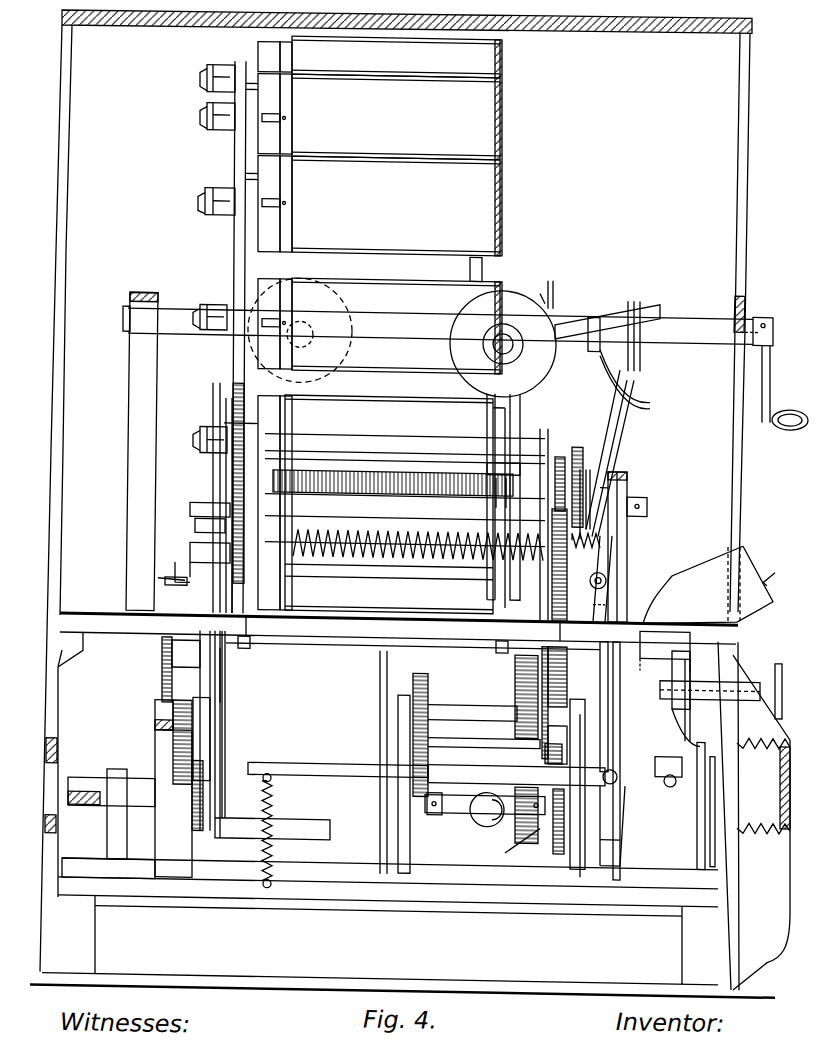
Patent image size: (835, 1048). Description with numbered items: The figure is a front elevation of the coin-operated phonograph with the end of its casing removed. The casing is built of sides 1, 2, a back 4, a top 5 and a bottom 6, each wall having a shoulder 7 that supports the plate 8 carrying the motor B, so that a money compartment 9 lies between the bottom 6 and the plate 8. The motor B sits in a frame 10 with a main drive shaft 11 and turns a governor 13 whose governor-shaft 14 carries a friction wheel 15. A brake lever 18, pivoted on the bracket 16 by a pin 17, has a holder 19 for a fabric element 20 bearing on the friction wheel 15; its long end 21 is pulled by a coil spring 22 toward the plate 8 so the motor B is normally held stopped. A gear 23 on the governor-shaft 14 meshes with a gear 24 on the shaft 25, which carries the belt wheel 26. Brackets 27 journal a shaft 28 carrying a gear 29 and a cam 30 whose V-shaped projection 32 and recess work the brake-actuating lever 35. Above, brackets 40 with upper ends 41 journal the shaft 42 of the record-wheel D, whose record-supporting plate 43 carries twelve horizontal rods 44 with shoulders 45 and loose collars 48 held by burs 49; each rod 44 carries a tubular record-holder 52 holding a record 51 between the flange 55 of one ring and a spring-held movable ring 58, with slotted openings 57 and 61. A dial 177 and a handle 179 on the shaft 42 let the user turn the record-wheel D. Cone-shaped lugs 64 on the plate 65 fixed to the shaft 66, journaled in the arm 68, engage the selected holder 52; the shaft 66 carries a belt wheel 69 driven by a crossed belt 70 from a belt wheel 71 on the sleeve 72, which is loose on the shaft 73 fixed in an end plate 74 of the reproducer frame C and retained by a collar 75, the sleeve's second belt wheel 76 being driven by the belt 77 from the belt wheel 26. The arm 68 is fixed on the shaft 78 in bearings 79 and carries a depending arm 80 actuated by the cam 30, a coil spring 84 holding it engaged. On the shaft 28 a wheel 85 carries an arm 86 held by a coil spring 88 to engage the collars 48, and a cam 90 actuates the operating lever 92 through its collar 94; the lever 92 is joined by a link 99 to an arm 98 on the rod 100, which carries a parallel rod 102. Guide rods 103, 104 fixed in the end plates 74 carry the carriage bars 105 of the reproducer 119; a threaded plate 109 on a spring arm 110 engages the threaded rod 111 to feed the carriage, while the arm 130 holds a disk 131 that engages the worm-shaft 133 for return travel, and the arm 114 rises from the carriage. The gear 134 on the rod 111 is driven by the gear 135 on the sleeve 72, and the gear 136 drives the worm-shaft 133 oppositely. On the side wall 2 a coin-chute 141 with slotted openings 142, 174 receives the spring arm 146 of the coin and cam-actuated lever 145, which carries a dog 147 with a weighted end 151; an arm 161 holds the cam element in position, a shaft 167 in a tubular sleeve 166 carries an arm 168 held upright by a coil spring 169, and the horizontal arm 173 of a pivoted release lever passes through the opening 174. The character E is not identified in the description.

The side 1 is at (80, 716).
The side wall 2 is at (728, 840).
The back 4 is at (80, 669).
The top 5 is at (462, 624).
The bottom 6 is at (341, 975).
The shoulder 7 is at (78, 900).
The plate 8 is at (416, 900).
The compartment 9 is at (545, 940).
The frame 10 is at (398, 741).
The main drive shaft 11 is at (585, 700).
The governor 13 is at (487, 820).
The governor-shaft 14 is at (428, 806).
The friction wheel 15 is at (520, 843).
The standard or bracket 16 is at (620, 836).
The pin 17 is at (621, 778).
The brake lever 18 is at (516, 745).
The holder 19 is at (524, 749).
The fabric element 20 is at (548, 752).
The free or long end 21 is at (292, 760).
The coil spring 22 is at (274, 846).
The gear 23 is at (512, 848).
The gear 24 is at (556, 850).
The shaft 25 is at (622, 818).
The belt wheel 26 is at (600, 740).
The brackets or standards 27 is at (252, 645).
The shaft 28 is at (172, 651).
The gear 29 is at (560, 668).
The cam 30 is at (610, 680).
The V-shaped projection 32 is at (565, 655).
The brake-actuating lever 35 is at (665, 792).
The supports or brackets 40 is at (130, 422).
The upper ends 41 is at (128, 330).
The shaft 42 is at (165, 306).
The record-supporting plate 43 is at (235, 263).
The shafts or rods 44 is at (200, 312).
The shoulder 45 is at (248, 290).
The collar 48 is at (222, 64).
The bur 49 is at (207, 96).
The record 51 is at (374, 324).
The tubular element 52 is at (262, 50).
The flange 55 is at (505, 50).
The right angular slotted openings 57 is at (672, 746).
The movable ring 58 is at (292, 60).
The slotted openings 61 is at (282, 116).
The cone-shaped lug 64 is at (542, 285).
The plate 65 is at (555, 278).
The shaft 66 is at (572, 315).
The arm 68 is at (620, 420).
The belt wheel 69 is at (640, 300).
The crossed belt 70 is at (630, 400).
The belt wheel 71 is at (627, 488).
The sleeve 72 is at (600, 460).
The shaft 73 is at (647, 496).
The upper end plates 74 is at (403, 627).
The collar 75 is at (658, 510).
The second belt wheel 76 is at (628, 472).
The belt 77 is at (628, 541).
The shaft 78 is at (607, 572).
The bearings or brackets 79 is at (606, 596).
The depending arm 80 is at (612, 652).
The coil spring 84 is at (586, 553).
The wheel 85 is at (210, 694).
The arm 86 is at (222, 648).
The coil spring 88 is at (212, 700).
The cam 90 is at (162, 672).
The operating lever 92 is at (176, 570).
The collar 94 is at (158, 576).
The arm 98 is at (196, 522).
The link 99 is at (190, 548).
The rod or shaft 100 is at (197, 507).
The rod 102 is at (213, 477).
The guide rod 103 is at (225, 381).
The guide rod 104 is at (335, 465).
The bars 105 is at (490, 418).
The threaded plate 109 is at (495, 482).
The spring arm 110 is at (515, 475).
The finely threaded rod 111 is at (395, 505).
The arm 114 is at (530, 420).
The reproducer 119 is at (503, 344).
The arm 130 is at (498, 605).
The disk 131 is at (470, 538).
The worm-shaft 133 is at (435, 562).
The gear 134 is at (580, 435).
The gear 135 is at (588, 460).
The gear 136 is at (559, 445).
The coin-chute 141 is at (716, 767).
The slotted opening 142 is at (681, 647).
The coin and cam-actuated lever 145 is at (662, 709).
The spring arm 146 is at (675, 700).
The dog 147 is at (697, 816).
The weighted end 151 is at (698, 858).
The arm 161 is at (700, 731).
The tubular sleeve 166 is at (745, 668).
The shaft 167 is at (652, 392).
The arm 168 is at (672, 668).
The coil spring 169 is at (663, 641).
The horizontally disposed arm 173 is at (774, 730).
The slotted opening 174 is at (780, 700).
The dial 177 is at (470, 266).
The handle 179 is at (784, 396).
The motor B is at (340, 683).
The reproducer-supporting frame C is at (378, 624).
The record-wheel D is at (235, 240).
The top wall E is at (632, 26).